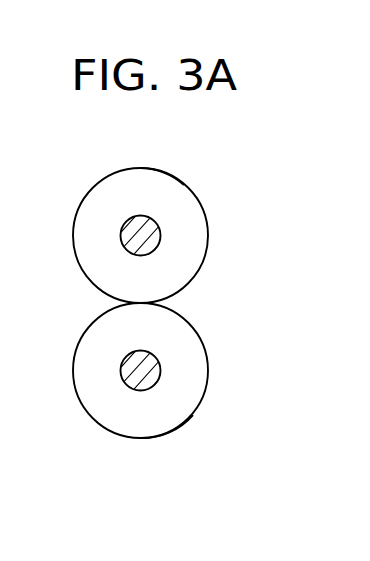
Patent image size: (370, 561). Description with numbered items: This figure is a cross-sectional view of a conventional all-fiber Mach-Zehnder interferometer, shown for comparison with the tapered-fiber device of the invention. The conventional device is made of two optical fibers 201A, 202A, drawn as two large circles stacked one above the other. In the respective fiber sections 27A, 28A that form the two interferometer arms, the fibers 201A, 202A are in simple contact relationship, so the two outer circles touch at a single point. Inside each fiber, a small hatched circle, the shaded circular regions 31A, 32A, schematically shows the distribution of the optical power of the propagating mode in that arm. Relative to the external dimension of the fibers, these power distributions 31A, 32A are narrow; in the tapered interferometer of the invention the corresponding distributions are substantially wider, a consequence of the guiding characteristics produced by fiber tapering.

The fiber 201A is at (74, 230).
The fiber 202A is at (83, 406).
The fiber section 27A is at (184, 185).
The fiber section 28A is at (193, 415).
The shaded circular region 31A is at (161, 236).
The shaded circular region 32A is at (161, 372).